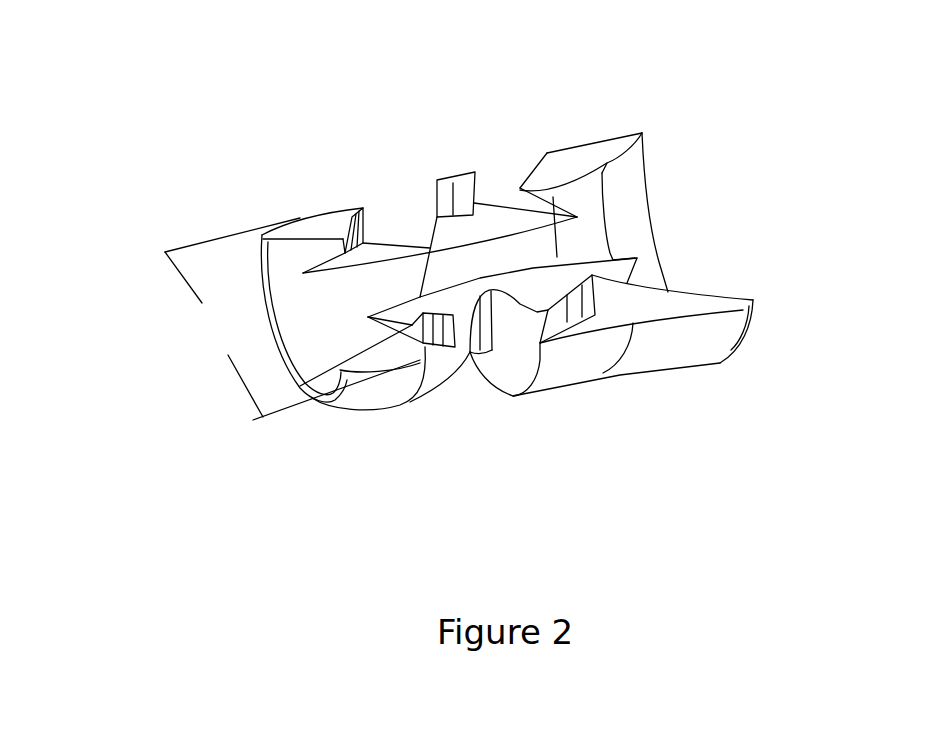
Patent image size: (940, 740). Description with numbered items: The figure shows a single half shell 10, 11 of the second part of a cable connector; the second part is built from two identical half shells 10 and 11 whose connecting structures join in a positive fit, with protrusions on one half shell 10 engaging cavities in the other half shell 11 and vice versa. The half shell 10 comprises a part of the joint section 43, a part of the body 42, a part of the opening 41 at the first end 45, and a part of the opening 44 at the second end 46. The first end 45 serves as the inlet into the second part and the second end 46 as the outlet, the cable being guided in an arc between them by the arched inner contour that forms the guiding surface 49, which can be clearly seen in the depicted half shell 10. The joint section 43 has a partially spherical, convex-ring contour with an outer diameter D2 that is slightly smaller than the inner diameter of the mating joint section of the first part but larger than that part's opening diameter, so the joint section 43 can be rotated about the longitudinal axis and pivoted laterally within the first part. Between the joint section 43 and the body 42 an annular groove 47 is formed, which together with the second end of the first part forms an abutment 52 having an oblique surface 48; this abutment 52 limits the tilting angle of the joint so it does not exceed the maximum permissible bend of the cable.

The half shell 10 is at (658, 152).
The half shell 11 is at (658, 152).
The opening 41 is at (683, 272).
The body 42 is at (655, 357).
The joint section 43 is at (400, 390).
The opening 44 is at (273, 353).
The first end 45 is at (660, 260).
The second end 46 is at (325, 378).
The annular groove 47 is at (487, 350).
The oblique surface 48 is at (512, 372).
The guiding surface 49 is at (537, 267).
The abutment 52 is at (468, 398).
The outer diameter D2 is at (292, 319).